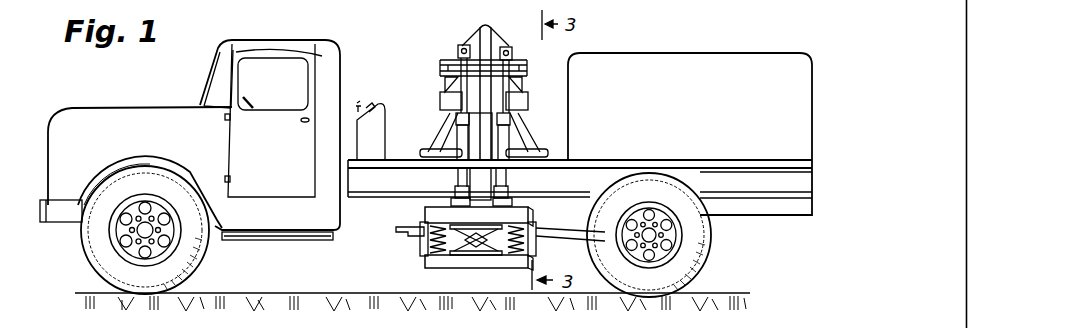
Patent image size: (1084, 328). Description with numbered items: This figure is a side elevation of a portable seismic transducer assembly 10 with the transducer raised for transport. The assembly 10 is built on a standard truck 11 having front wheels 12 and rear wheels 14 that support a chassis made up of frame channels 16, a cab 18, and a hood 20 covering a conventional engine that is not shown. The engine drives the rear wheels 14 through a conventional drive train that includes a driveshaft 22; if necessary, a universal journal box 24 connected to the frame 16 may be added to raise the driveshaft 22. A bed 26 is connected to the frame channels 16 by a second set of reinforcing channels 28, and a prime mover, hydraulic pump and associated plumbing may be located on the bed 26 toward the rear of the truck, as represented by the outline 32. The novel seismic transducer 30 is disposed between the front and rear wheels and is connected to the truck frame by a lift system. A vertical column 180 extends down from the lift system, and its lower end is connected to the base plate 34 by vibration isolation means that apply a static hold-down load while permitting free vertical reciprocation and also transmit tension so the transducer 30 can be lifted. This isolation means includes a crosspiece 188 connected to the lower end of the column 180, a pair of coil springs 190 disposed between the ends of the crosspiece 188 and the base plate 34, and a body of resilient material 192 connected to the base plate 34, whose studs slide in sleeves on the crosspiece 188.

The portable seismic transducer assembly 10 is at (96, 71).
The truck 11 is at (300, 246).
The front wheels 12 is at (93, 258).
The rear wheels 14 is at (702, 266).
The frame channels 16 is at (372, 218).
The cab 18 is at (270, 38).
The hood 20 is at (137, 108).
The driveshaft 22 is at (572, 233).
The universal journal box 24 is at (400, 232).
The bed 26 is at (398, 158).
The reinforcing channels 28 is at (766, 188).
The seismic transducer 30 is at (467, 103).
The outline 32 is at (666, 53).
The base plate 34 is at (472, 262).
The column 180 is at (486, 32).
The crosspiece 188 is at (518, 217).
The coil springs 190 is at (438, 243).
The body of resilient material 192 is at (458, 242).